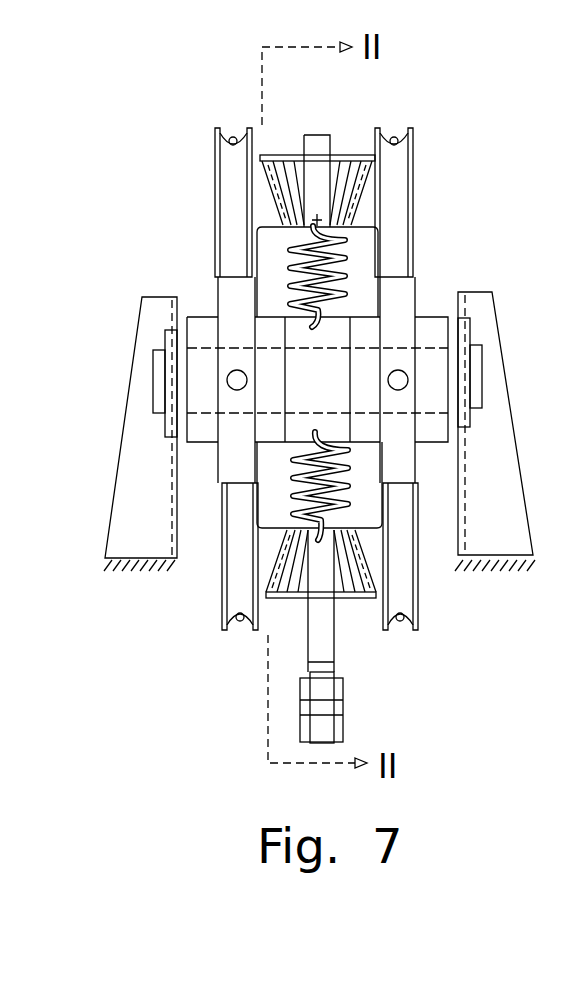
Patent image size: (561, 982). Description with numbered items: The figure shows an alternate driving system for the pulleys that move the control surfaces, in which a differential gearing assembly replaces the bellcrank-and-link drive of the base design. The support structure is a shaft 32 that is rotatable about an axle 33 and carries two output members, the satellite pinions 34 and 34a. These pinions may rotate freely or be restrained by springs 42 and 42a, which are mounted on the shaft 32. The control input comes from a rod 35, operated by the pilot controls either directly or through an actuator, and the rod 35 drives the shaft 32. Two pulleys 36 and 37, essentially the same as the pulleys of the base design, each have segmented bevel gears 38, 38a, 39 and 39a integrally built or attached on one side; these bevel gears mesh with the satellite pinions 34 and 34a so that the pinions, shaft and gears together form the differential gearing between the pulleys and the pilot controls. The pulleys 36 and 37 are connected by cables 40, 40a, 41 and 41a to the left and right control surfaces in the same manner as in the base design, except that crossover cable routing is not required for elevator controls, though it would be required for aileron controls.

The shaft 32 is at (323, 638).
The axle 33 is at (155, 377).
The satellite pinion 34 is at (345, 165).
The satellite pinion 34a is at (341, 596).
The rod 35 is at (345, 725).
The pulley 36 is at (400, 172).
The pulley 37 is at (228, 195).
The segmented bevel gear 38 is at (367, 215).
The segmented bevel gear 38a is at (377, 552).
The segmented bevel gear 39 is at (258, 215).
The segmented bevel gear 39a is at (263, 550).
The cable 40 is at (397, 134).
The cable 40a is at (404, 622).
The cable 41 is at (231, 134).
The cable 41a is at (242, 622).
The spring 42 is at (343, 260).
The spring 42a is at (295, 470).